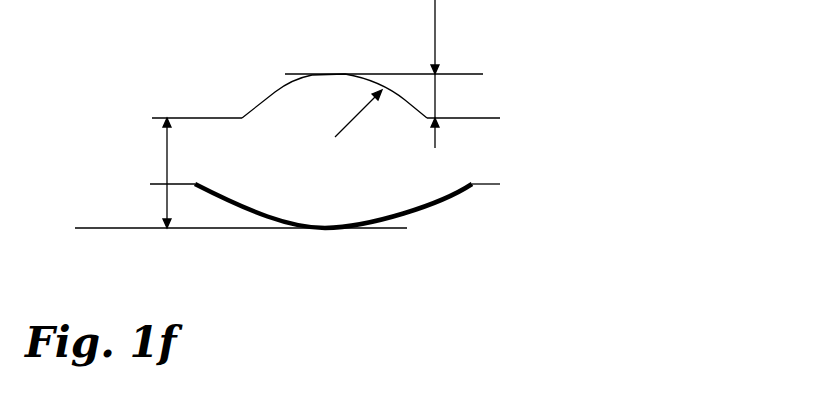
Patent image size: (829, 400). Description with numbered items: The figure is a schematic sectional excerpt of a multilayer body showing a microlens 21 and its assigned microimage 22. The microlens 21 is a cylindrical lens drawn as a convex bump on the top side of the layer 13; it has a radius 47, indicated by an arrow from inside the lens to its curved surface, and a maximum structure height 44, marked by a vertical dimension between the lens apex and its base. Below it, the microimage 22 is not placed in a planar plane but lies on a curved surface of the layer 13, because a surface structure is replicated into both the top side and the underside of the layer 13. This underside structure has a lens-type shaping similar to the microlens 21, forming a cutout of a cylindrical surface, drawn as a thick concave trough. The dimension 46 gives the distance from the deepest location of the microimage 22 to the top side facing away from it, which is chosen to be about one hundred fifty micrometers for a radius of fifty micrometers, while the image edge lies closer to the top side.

The layer 13 is at (520, 145).
The microlens 21 is at (276, 91).
The microimage 22 is at (358, 212).
The maximum structure height 44 is at (451, 74).
The dimension 46 is at (139, 173).
The radius 47 is at (359, 115).